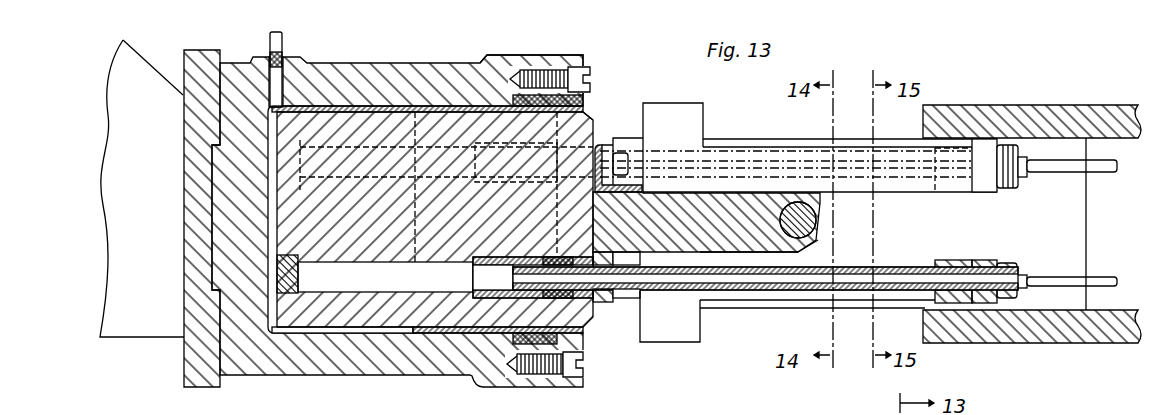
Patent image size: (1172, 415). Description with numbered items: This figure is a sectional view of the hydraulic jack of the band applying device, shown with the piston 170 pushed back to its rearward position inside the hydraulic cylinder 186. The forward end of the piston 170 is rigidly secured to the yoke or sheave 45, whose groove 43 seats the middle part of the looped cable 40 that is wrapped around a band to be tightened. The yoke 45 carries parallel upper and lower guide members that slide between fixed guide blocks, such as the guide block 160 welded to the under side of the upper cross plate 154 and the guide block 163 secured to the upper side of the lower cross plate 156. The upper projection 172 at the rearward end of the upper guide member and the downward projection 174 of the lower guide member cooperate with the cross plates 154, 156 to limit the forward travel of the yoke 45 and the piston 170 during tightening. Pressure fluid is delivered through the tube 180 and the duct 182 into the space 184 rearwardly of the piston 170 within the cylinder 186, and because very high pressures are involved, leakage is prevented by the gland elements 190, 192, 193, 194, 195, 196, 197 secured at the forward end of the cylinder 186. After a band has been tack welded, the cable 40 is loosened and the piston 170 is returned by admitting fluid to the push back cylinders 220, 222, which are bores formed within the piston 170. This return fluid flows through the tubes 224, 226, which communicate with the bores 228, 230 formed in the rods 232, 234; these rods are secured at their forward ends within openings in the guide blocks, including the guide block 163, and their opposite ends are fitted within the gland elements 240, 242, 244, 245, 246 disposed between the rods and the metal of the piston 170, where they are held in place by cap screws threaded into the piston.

The looped cable 40 is at (812, 213).
The groove 43 is at (817, 239).
The yoke or sheave 45 is at (750, 252).
The upper cross plate 154 is at (1069, 105).
The lower cross plate 156 is at (1095, 343).
The guide block 160 is at (720, 145).
The guide block 163 is at (980, 260).
The piston 170 is at (594, 114).
The upper projection 172 is at (673, 103).
The downward projection 174 is at (678, 343).
The tube 180 is at (283, 33).
The duct 182 is at (276, 88).
The space 184 is at (273, 208).
The hydraulic cylinder 186 is at (313, 367).
The gland element 190 is at (442, 101).
The gland element 192 is at (505, 55).
The gland element 193 is at (543, 377).
The gland element 194 is at (584, 100).
The gland element 195 is at (571, 54).
The gland element 196 is at (588, 68).
The gland element 197 is at (584, 374).
The push back cylinder 220 is at (327, 168).
The push back cylinder 222 is at (352, 287).
The tube 224 is at (1102, 173).
The tube 226 is at (1100, 275).
The bore 228 is at (900, 266).
The bore 230 is at (912, 166).
The rod 232 is at (842, 151).
The rod 234 is at (856, 293).
The gland element 240 is at (480, 277).
The gland element 242 is at (552, 258).
The gland element 244 is at (594, 238).
The gland element 245 is at (592, 310).
The gland element 246 is at (603, 302).